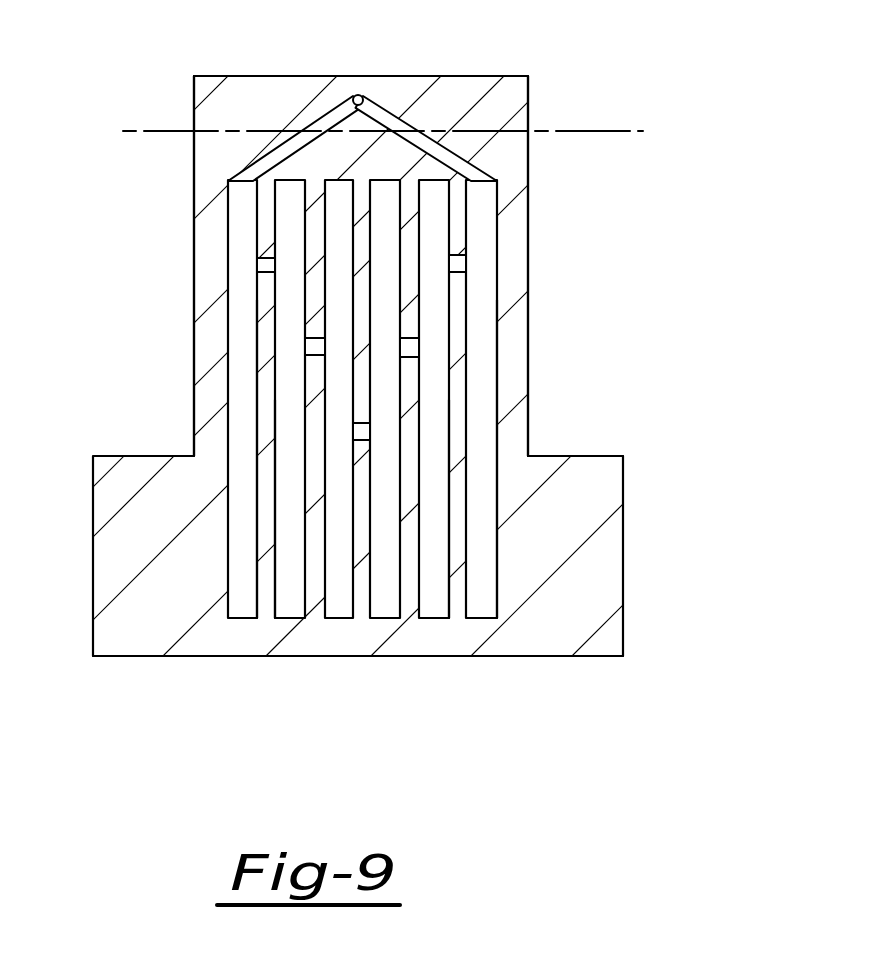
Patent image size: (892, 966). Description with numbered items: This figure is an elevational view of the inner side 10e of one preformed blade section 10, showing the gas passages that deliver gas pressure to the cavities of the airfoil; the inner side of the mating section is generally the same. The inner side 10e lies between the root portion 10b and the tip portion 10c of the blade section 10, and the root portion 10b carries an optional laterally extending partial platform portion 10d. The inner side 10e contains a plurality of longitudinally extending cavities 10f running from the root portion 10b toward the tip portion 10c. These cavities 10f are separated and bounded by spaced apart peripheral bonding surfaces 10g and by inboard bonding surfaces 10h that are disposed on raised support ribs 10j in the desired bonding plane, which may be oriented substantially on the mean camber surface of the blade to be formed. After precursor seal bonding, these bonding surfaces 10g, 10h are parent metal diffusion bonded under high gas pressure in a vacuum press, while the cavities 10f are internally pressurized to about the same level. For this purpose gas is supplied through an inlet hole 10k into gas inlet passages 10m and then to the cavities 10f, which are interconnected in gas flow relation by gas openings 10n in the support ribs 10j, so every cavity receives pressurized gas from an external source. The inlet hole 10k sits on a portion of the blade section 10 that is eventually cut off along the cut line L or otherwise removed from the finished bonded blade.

The blade section 10 is at (608, 336).
The root portion 10b is at (597, 567).
The tip portion 10c is at (453, 88).
The platform portion 10d is at (597, 457).
The inner side 10e is at (516, 322).
The cavities 10f is at (285, 415).
The peripheral bonding surfaces 10g is at (212, 245).
The inboard bonding surfaces 10h is at (262, 450).
The support ribs 10j is at (255, 217).
The inlet hole 10k is at (359, 94).
The gas inlet passages 10m is at (333, 115).
The gas openings 10n is at (265, 262).
The cut line L is at (622, 131).